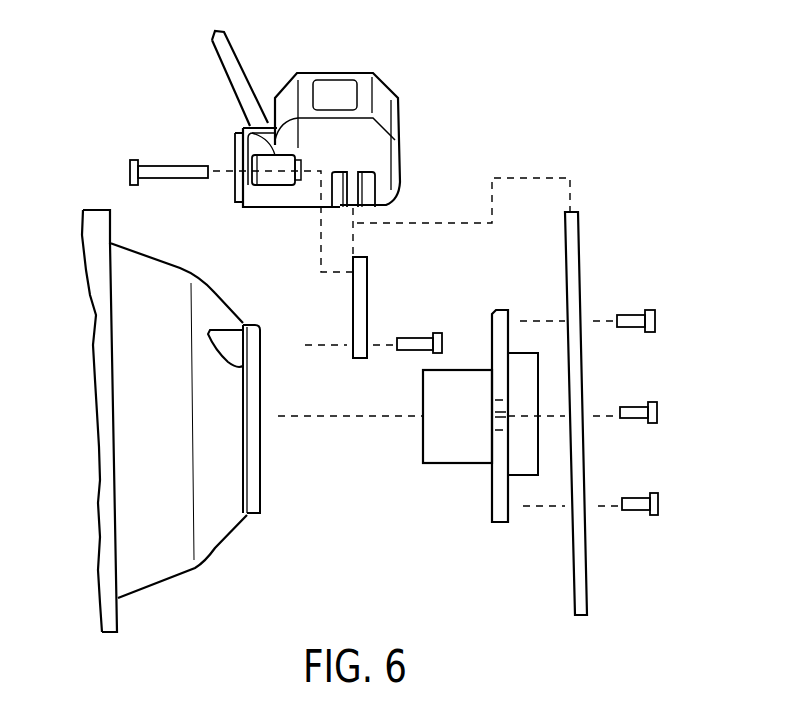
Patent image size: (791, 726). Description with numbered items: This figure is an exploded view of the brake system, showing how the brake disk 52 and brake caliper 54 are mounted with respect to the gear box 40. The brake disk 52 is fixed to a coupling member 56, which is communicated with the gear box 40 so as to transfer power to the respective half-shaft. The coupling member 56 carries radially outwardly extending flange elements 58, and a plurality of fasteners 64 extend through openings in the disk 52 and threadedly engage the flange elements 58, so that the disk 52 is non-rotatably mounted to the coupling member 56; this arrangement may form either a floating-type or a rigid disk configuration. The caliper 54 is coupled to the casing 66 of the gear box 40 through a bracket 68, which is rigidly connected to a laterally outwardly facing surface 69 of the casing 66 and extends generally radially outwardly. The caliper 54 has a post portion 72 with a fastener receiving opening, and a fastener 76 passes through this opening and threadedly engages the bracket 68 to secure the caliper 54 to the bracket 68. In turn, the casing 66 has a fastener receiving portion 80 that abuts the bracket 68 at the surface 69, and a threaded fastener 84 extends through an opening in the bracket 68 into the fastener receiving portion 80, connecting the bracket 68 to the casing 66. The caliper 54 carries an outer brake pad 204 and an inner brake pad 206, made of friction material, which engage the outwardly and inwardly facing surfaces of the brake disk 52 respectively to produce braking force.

The gear box 40 is at (158, 588).
The brake disk 52 is at (588, 578).
The brake caliper 54 is at (380, 93).
The coupling member 56 is at (442, 450).
The flange element 58 is at (498, 320).
The fastener 64 is at (657, 317).
The casing 66 is at (168, 444).
The bracket 68 is at (358, 293).
The laterally outwardly facing surface 69 is at (252, 325).
The post portion 72 is at (268, 163).
The fastener 76 is at (130, 168).
The fastener receiving portion 80 is at (228, 345).
The threaded fastener 84 is at (417, 337).
The outer brake pad 204 is at (367, 210).
The inner brake pad 206 is at (343, 208).